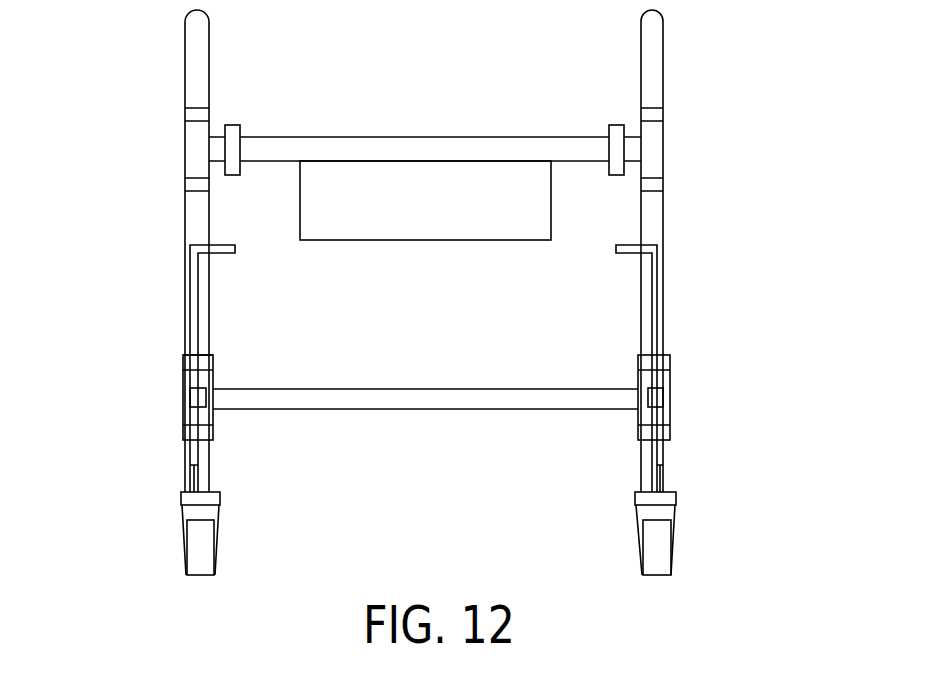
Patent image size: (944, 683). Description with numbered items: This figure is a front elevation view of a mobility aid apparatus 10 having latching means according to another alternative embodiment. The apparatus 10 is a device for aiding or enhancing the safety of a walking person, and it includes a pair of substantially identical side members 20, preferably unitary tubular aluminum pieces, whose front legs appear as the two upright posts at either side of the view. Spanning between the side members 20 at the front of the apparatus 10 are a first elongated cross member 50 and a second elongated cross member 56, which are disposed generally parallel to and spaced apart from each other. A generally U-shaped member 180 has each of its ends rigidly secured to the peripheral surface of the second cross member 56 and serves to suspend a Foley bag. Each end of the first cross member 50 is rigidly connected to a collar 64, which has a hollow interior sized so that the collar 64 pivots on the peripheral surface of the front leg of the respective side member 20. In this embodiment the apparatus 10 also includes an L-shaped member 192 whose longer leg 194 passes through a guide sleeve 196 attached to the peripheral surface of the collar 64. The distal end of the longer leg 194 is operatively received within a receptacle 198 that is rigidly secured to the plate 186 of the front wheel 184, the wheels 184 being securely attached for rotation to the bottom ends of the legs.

The mobility aid apparatus 10 is at (727, 63).
The side member 20 is at (672, 162).
The second elongated cross member 56 is at (403, 143).
The U-shaped member 180 is at (443, 240).
The L-shaped member 192 is at (186, 283).
The longer leg 194 is at (186, 343).
The guide sleeve 196 is at (191, 398).
The collar 64 is at (215, 378).
The first elongated cross member 50 is at (425, 389).
The receptacle 198 is at (198, 477).
The plate 186 is at (220, 522).
The wheel 184 is at (217, 563).